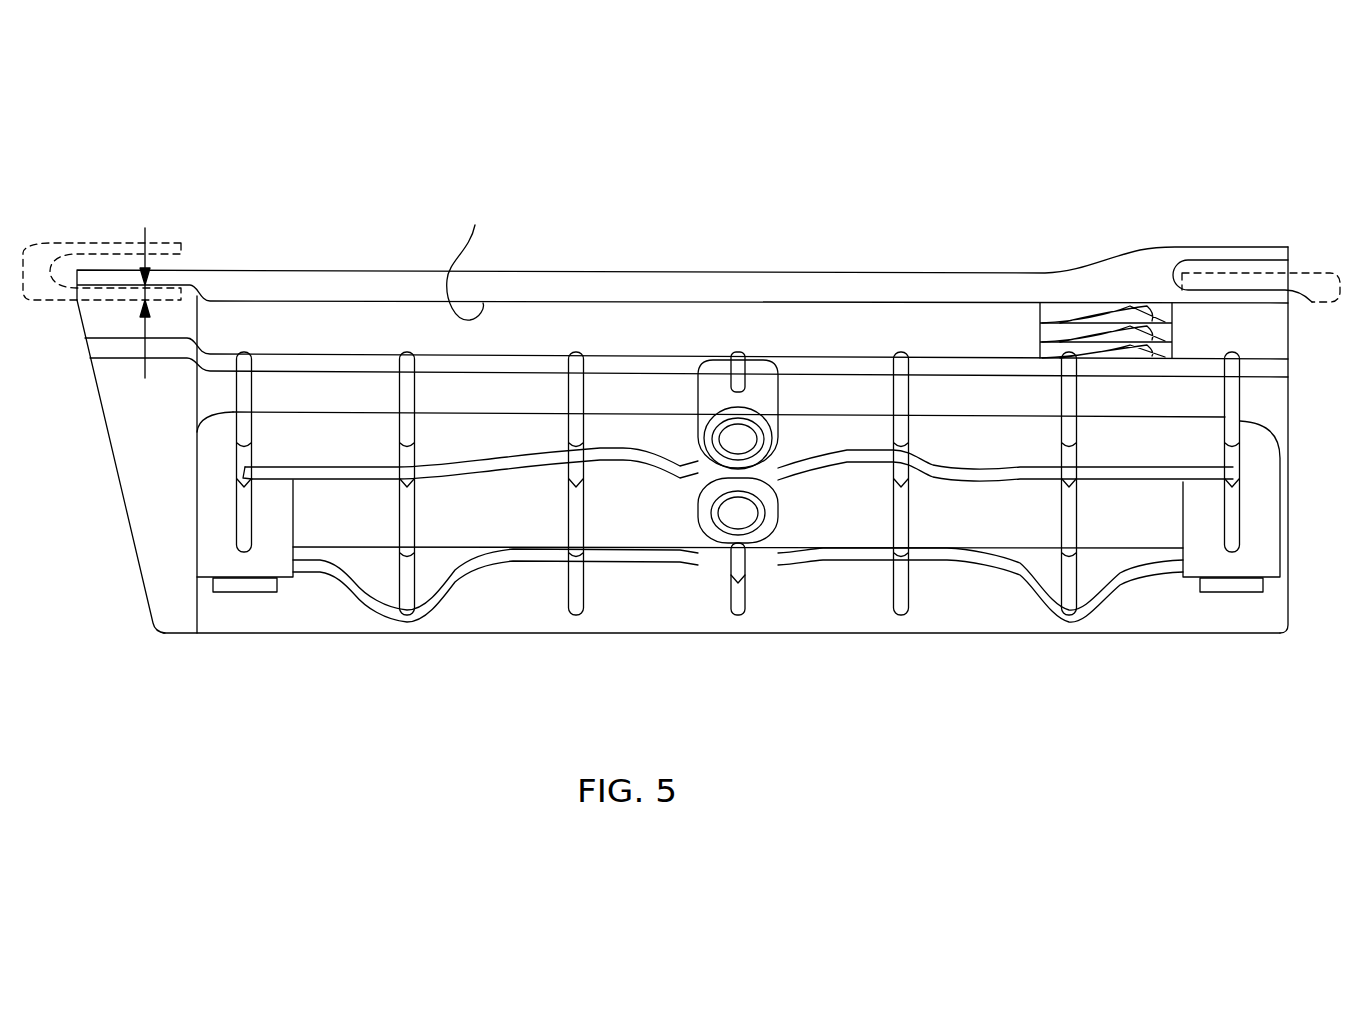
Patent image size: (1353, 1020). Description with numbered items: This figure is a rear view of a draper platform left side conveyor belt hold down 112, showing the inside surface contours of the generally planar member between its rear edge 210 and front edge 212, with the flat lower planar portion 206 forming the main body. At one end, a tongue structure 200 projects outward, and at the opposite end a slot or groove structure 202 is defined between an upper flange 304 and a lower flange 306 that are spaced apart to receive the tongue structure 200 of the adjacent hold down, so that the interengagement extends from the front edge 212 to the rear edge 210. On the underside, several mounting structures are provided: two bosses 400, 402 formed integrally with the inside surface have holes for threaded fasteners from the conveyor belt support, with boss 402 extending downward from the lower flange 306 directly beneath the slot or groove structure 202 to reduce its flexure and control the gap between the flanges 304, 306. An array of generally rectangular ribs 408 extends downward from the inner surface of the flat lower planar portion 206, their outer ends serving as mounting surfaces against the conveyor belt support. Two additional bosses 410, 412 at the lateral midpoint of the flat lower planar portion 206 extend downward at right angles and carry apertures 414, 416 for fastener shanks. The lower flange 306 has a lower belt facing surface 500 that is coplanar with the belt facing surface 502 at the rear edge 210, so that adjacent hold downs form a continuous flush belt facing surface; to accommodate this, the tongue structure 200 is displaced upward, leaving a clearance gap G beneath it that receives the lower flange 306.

The conveyor belt hold down 112 is at (725, 203).
The tongue structure 200 is at (50, 243).
The slot or groove structure 202 is at (110, 215).
The flat lower planar portion 206 is at (983, 518).
The rear edge 210 is at (538, 268).
The front edge 212 is at (503, 633).
The upper flange 304 is at (1240, 247).
The lower flange 306 is at (1253, 305).
The boss 400 is at (277, 557).
The boss 402 is at (1203, 555).
The ribs 408 is at (437, 480).
The boss 410 is at (763, 387).
The boss 412 is at (777, 487).
The aperture 414 is at (737, 437).
The aperture 416 is at (738, 512).
The lower belt facing surface 500 is at (1217, 307).
The belt facing surface 502 is at (470, 257).